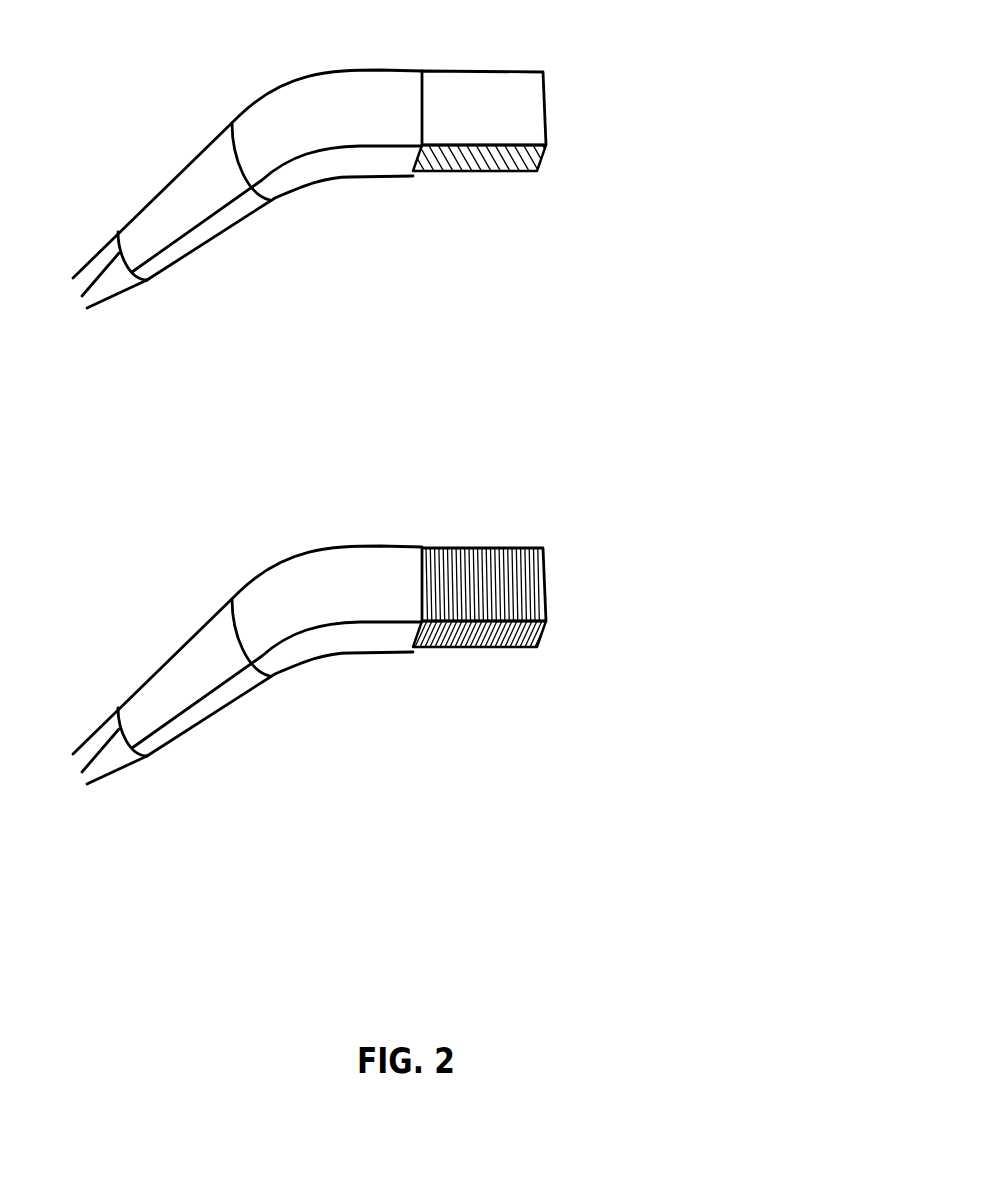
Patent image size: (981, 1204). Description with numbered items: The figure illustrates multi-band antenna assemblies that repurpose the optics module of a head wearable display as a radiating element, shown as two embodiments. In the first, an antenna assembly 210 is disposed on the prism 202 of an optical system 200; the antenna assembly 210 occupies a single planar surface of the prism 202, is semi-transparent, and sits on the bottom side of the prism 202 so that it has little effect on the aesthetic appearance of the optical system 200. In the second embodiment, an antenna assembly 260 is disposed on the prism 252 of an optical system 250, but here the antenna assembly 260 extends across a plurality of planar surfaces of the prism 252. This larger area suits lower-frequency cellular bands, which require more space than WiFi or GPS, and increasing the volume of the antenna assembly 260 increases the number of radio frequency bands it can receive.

The optical system 200 is at (202, 172).
The prism 202 is at (510, 80).
The antenna assembly 210 is at (522, 157).
The optical system 250 is at (218, 643).
The prism 252 is at (530, 550).
The antenna assembly 260 is at (540, 633).